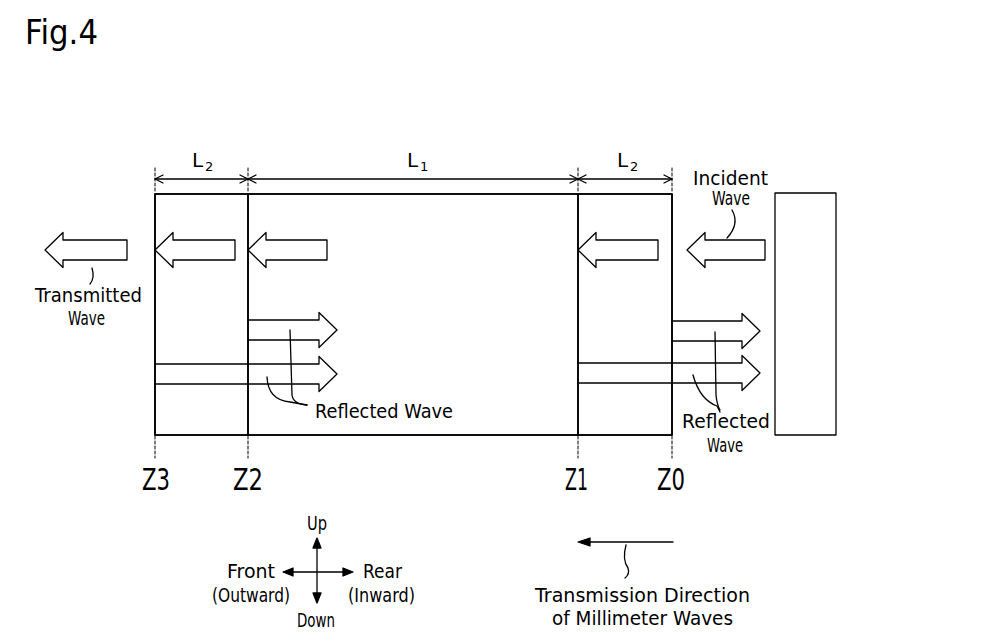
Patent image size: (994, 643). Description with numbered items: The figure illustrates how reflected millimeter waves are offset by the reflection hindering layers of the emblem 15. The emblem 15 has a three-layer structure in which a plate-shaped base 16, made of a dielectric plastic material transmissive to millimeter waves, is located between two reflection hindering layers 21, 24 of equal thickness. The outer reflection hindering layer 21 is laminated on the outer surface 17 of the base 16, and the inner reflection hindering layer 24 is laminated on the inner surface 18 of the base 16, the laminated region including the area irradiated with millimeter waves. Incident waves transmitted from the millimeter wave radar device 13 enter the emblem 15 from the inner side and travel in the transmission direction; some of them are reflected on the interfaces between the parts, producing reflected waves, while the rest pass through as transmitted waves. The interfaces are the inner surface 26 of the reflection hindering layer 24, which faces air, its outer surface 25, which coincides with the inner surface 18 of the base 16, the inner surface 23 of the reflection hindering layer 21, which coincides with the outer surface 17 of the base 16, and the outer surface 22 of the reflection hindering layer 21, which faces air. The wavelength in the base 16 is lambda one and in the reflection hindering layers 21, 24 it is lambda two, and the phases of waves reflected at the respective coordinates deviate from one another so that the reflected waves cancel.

The millimeter wave radar device 13 is at (800, 437).
The emblem 15 is at (136, 146).
The base 16 is at (413, 433).
The outer surface of the base 17 is at (246, 288).
The inner surface of the base 18 is at (580, 289).
The reflection hindering layer 21 is at (200, 425).
The outer surface of the reflection hindering layer 22 is at (150, 297).
The inner surface of the reflection hindering layer 23 is at (257, 354).
The reflection hindering layer 24 is at (626, 425).
The outer surface of the reflection hindering layer 25 is at (574, 339).
The inner surface of the reflection hindering layer 26 is at (676, 290).